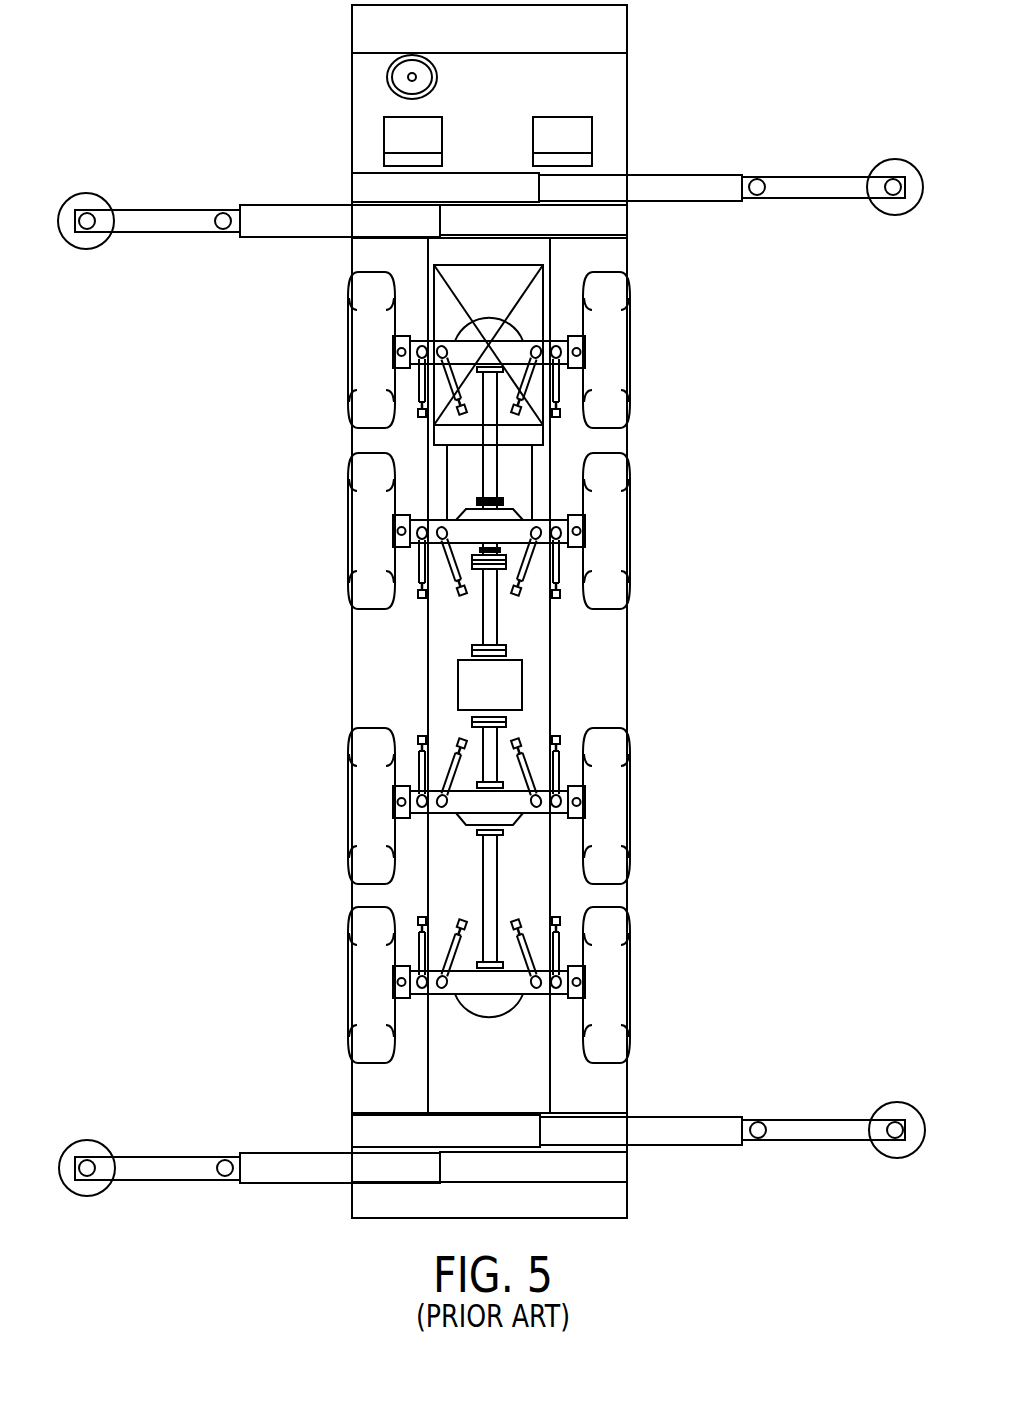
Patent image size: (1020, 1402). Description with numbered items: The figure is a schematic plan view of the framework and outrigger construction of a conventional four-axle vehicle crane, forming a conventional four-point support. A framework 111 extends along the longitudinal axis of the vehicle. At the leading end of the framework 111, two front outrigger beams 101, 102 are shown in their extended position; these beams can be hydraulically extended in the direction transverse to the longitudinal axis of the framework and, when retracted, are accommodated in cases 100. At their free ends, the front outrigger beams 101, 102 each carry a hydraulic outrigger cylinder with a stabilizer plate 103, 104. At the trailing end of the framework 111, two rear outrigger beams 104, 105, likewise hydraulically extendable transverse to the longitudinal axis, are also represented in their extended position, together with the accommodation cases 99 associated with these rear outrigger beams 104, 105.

The accommodation cases 99 is at (352, 1125).
The cases 100 is at (352, 178).
The front outrigger beam 101 is at (157, 213).
The front outrigger beam 102 is at (792, 182).
The stabilizer plate 103 is at (92, 240).
The stabilizer plate 104 is at (883, 205).
The rear outrigger beam 105 is at (813, 1128).
The framework 111 is at (527, 637).